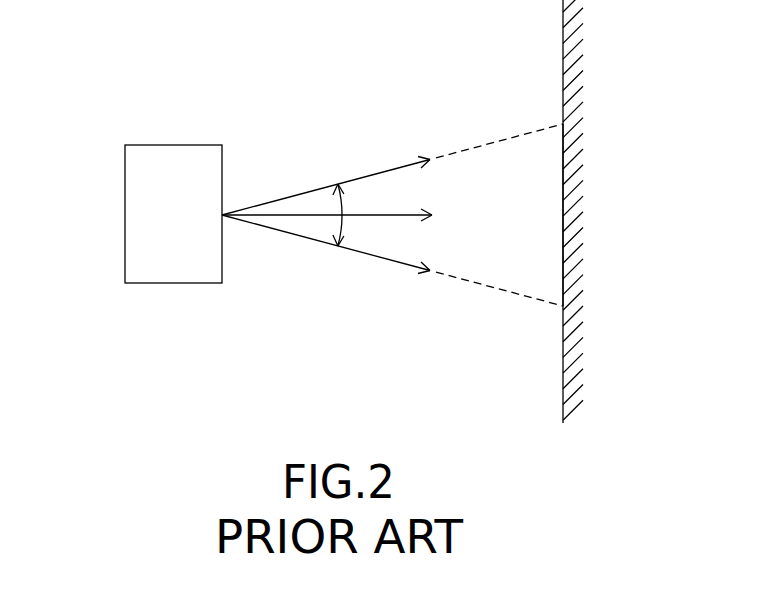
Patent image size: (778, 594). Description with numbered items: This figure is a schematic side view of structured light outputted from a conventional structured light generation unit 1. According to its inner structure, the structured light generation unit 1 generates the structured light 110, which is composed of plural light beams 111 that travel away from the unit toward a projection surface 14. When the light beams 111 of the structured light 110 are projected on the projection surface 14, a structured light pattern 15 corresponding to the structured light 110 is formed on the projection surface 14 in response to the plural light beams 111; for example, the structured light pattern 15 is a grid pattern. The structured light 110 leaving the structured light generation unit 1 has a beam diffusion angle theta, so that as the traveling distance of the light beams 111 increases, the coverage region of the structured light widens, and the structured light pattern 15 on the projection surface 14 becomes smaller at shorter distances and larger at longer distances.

The structured light generation unit 1 is at (145, 208).
The structured light 110 is at (290, 163).
The light beams 111 is at (380, 167).
The projection surface 14 is at (563, 345).
The structured light pattern 15 is at (562, 150).